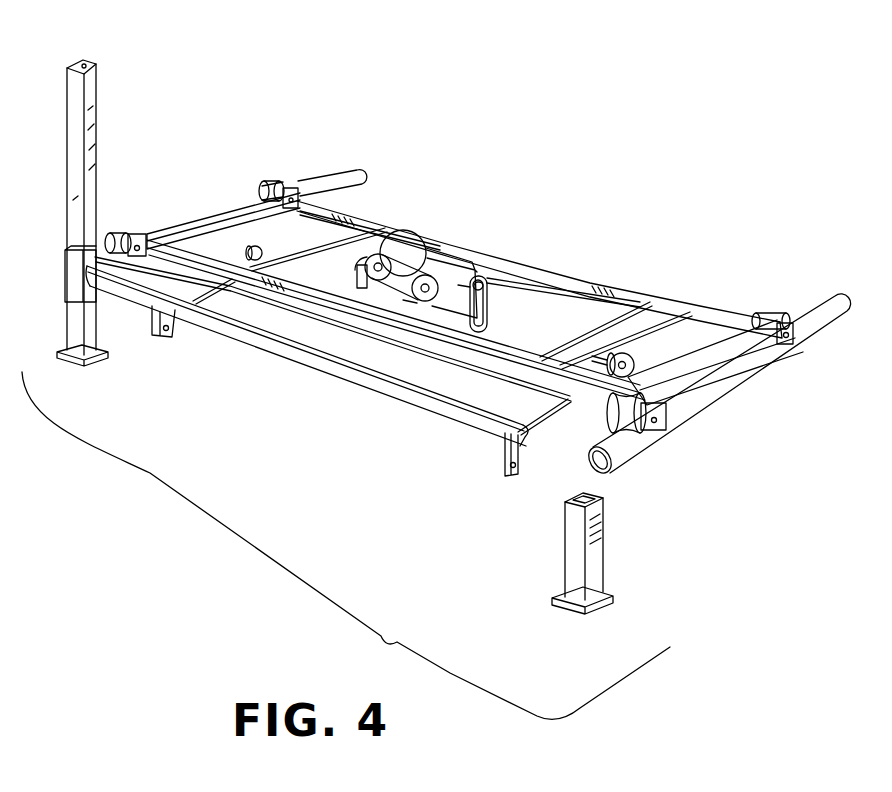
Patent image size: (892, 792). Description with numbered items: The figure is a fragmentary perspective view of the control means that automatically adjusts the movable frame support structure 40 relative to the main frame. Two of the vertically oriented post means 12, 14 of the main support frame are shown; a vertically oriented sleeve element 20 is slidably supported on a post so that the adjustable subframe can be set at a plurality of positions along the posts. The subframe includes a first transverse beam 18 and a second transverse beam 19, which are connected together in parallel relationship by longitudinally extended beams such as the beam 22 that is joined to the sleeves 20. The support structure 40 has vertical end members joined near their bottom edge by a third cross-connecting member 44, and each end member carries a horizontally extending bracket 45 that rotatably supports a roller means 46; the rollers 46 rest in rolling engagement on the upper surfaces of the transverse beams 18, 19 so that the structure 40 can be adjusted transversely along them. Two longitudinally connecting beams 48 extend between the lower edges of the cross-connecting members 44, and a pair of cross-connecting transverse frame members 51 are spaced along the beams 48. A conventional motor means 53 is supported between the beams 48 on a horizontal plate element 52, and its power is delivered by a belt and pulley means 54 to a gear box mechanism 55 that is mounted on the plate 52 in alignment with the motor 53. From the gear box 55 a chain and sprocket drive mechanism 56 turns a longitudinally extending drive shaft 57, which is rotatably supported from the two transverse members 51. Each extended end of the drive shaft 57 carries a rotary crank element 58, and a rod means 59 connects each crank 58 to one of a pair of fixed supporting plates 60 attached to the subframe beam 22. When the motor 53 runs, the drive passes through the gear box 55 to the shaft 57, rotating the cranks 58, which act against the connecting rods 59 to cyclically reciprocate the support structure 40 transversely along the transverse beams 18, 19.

The post means 12 is at (95, 80).
The post means 14 is at (598, 566).
The first transverse beam 18 is at (352, 178).
The second transverse beam 19 is at (753, 363).
The sleeve element 20 is at (65, 275).
The longitudinally extended beam 22 is at (392, 396).
The support structure 40 is at (467, 312).
The third cross-connecting member 44 is at (215, 200).
The bracket 45 is at (143, 236).
The roller means 46 is at (128, 233).
The longitudinally connecting beam 48 is at (347, 306).
The cross-connecting transverse frame member 51 is at (350, 217).
The horizontal plate element 52 is at (503, 272).
The motor means 53 is at (410, 238).
The belt and pulley means 54 is at (413, 252).
The gear box mechanism 55 is at (486, 280).
The chain and sprocket drive mechanism 56 is at (490, 297).
The drive shaft 57 is at (313, 274).
The rotary crank element 58 is at (258, 252).
The rod means 59 is at (198, 294).
The fixed supporting plate 60 is at (170, 332).